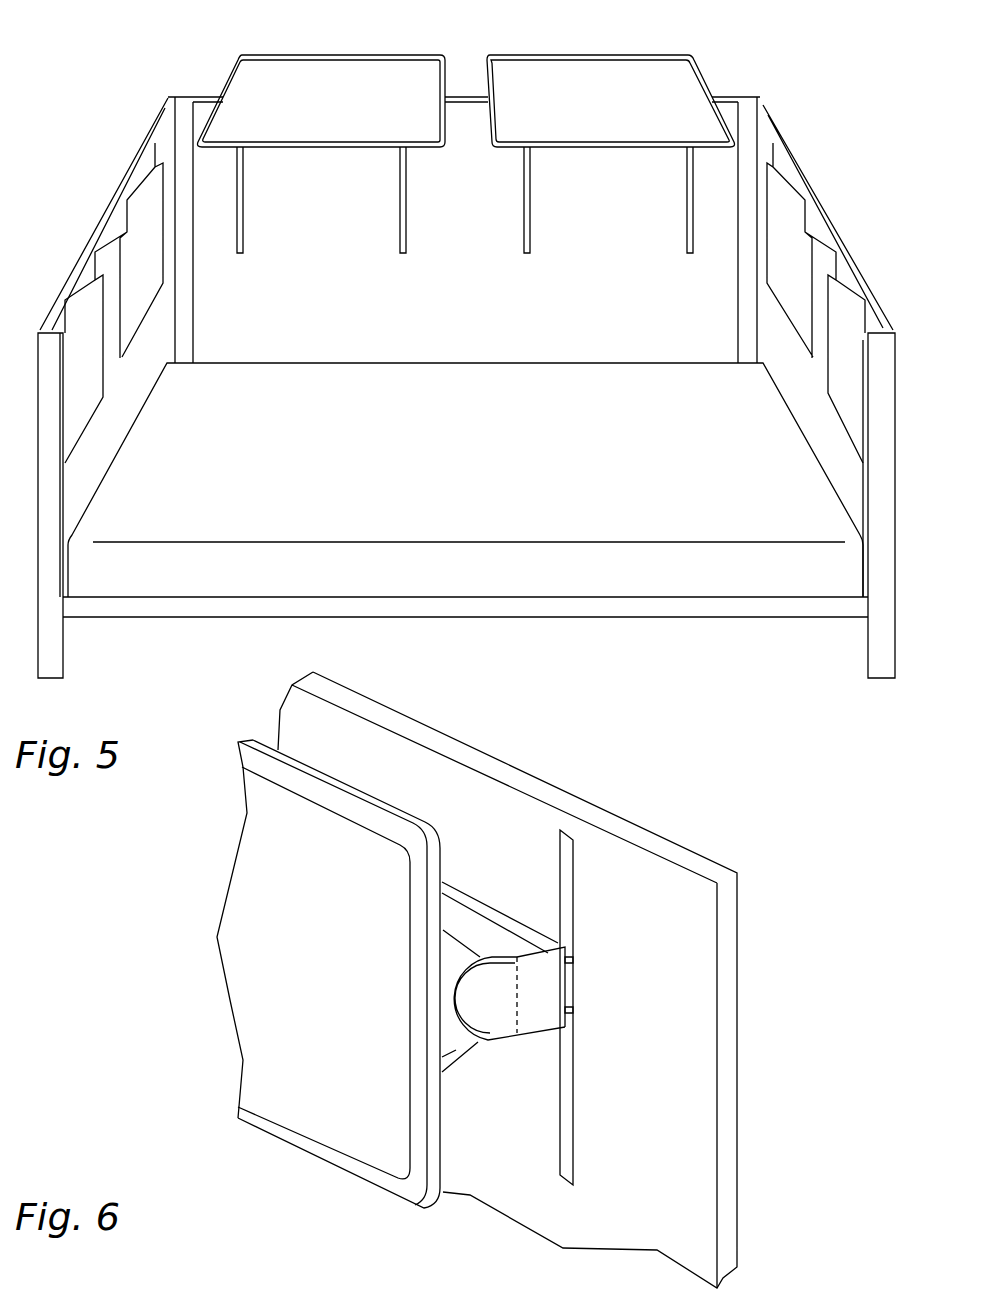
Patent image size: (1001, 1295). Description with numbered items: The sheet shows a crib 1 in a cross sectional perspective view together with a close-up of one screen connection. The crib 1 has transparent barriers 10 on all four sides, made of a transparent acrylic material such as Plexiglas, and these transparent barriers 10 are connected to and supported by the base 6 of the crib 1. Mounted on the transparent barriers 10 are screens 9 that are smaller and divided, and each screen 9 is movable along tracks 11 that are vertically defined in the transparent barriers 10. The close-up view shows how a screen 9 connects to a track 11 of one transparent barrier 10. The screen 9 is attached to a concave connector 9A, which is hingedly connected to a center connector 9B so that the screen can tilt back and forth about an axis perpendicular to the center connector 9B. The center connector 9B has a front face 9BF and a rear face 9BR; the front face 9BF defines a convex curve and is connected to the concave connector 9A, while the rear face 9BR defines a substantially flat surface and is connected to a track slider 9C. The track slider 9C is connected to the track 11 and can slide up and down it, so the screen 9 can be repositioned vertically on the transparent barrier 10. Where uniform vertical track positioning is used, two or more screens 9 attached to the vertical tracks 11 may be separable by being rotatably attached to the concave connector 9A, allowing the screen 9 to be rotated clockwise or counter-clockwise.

In FIG. 5, the crib 1 is at (875, 208).
In FIG. 5, the base 6 is at (600, 617).
In FIG. 5, the screen 9 is at (243, 90).
In FIG. 6, the screen 9 is at (308, 1157).
In FIG. 6, the concave connector 9A is at (457, 1060).
In FIG. 6, the center connector 9B is at (492, 903).
In FIG. 6, the front face 9BF is at (487, 1018).
In FIG. 6, the rear face 9BR is at (545, 987).
In FIG. 6, the track slider 9C is at (573, 982).
In FIG. 5, the transparent barrier 10 is at (462, 93).
In FIG. 6, the transparent barrier 10 is at (630, 823).
In FIG. 5, the track 11 is at (238, 213).
In FIG. 6, the track 11 is at (575, 903).